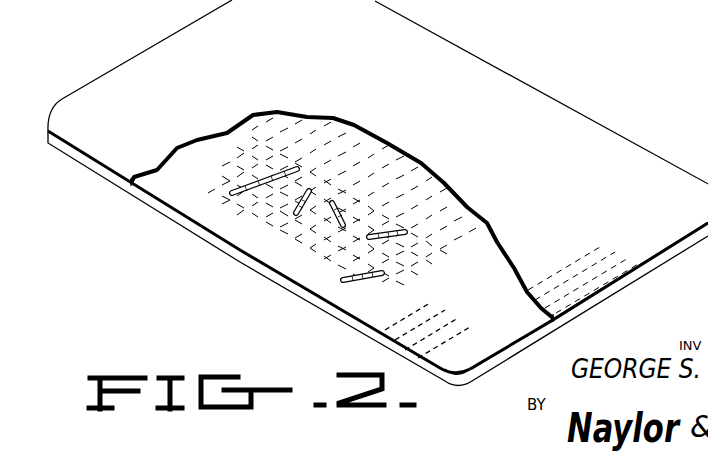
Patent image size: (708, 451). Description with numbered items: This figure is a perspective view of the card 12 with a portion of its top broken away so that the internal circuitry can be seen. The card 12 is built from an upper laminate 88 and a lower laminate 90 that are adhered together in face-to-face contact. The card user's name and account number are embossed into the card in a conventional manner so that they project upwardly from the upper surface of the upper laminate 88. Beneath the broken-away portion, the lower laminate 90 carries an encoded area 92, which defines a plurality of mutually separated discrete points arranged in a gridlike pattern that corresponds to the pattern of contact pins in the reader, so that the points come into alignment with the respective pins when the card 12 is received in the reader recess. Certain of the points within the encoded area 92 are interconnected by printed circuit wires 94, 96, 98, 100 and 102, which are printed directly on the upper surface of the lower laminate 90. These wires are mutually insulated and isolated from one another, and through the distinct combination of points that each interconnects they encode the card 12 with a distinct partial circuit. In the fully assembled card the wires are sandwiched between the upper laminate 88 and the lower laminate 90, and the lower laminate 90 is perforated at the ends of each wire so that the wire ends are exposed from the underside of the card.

The card 12 is at (634, 156).
The upper laminate 88 is at (590, 279).
The lower laminate 90 is at (480, 353).
The encoded area 92 is at (215, 196).
The printed circuit wire 94 is at (265, 180).
The printed circuit wire 96 is at (296, 203).
The printed circuit wire 98 is at (338, 207).
The printed circuit wire 100 is at (398, 239).
The printed circuit wire 102 is at (371, 279).